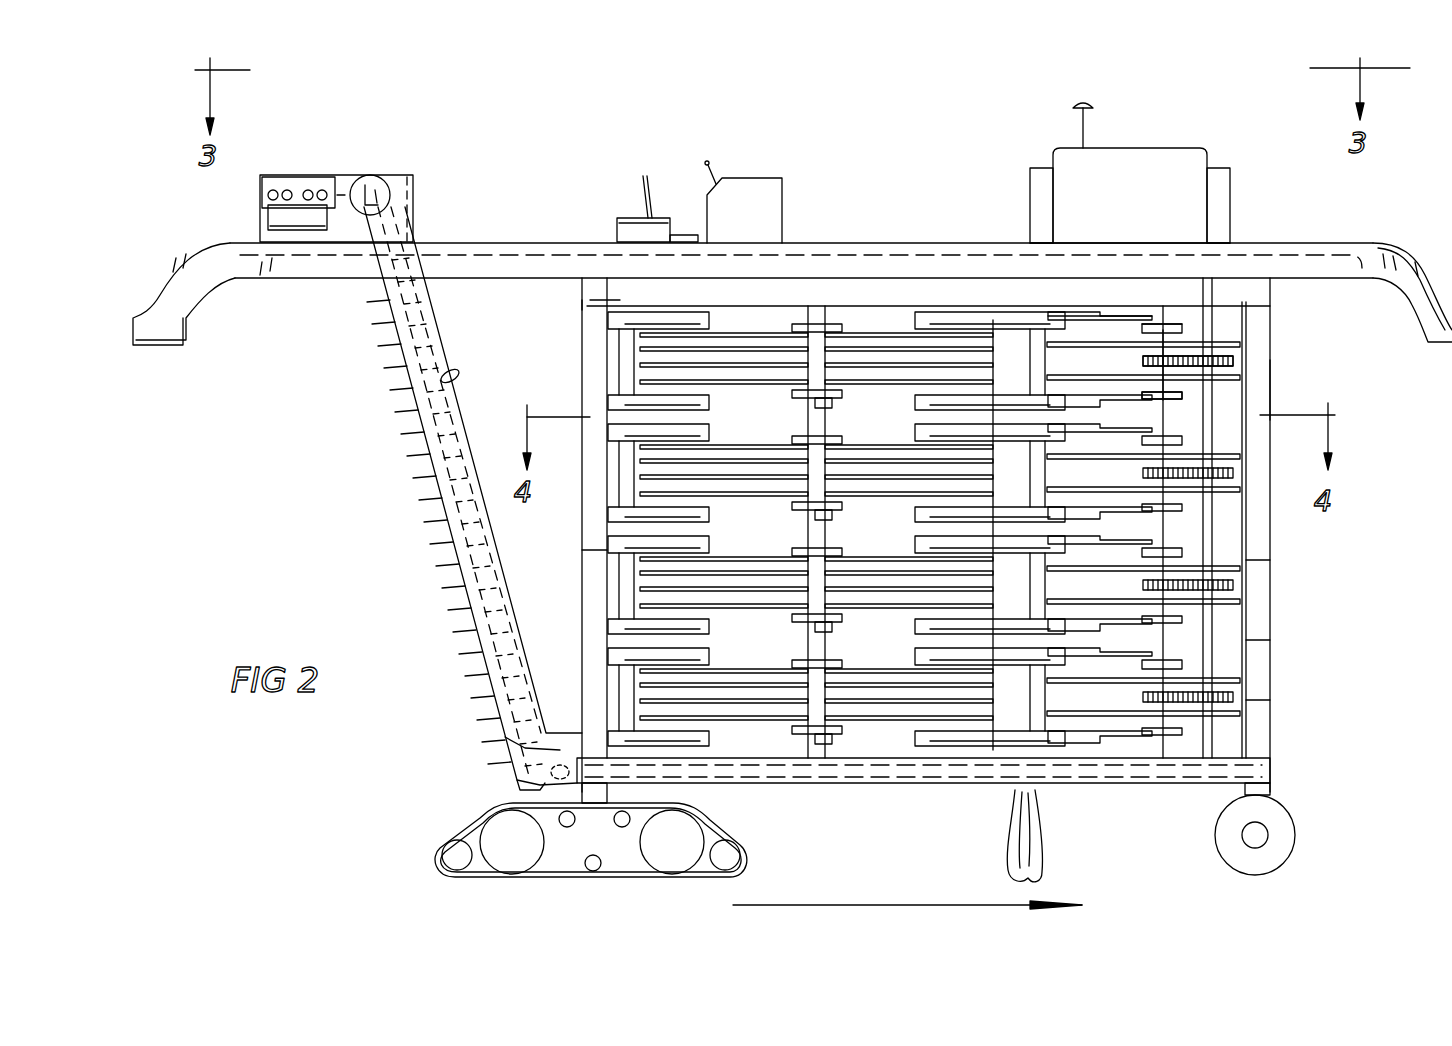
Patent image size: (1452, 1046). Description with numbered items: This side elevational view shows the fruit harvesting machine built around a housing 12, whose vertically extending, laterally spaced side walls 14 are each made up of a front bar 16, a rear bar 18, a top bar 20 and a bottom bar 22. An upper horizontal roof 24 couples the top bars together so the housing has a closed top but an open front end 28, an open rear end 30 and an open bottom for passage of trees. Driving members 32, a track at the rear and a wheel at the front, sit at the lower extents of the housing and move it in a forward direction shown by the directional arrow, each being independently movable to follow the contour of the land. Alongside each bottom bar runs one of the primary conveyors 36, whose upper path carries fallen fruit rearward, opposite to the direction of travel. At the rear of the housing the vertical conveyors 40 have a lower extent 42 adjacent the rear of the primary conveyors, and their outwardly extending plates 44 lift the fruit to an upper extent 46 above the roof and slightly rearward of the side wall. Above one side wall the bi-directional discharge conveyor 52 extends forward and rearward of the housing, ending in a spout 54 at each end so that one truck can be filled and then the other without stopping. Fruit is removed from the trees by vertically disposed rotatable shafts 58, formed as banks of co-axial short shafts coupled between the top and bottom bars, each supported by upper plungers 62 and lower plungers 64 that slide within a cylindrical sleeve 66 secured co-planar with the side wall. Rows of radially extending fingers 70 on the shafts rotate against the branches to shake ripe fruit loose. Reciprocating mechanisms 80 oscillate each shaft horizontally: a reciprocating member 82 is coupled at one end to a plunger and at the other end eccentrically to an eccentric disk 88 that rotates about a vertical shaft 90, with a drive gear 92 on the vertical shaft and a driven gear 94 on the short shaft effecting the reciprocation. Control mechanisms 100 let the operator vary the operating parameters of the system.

The housing 12 is at (1262, 318).
The side walls 14 is at (1272, 633).
The front bar 16 is at (1272, 568).
The rear bar 18 is at (592, 560).
The top bar 20 is at (870, 292).
The bottom bar 22 is at (910, 783).
The upper horizontal roof 24 is at (930, 285).
The open front end 28 is at (1298, 692).
The open rear end 30 is at (553, 323).
The driving members 32 is at (505, 885).
The primary conveyors 36 is at (520, 775).
The vertical conveyors 40 is at (440, 375).
The lower extent 42 is at (505, 735).
The outwardly extending plates 44 is at (440, 490).
The upper extent 46 is at (360, 185).
The bi-directional discharge conveyor 52 is at (455, 243).
The spout 54 is at (205, 308).
The rotatable shafts 58 is at (813, 345).
The upper plungers 62 is at (752, 318).
The lower plungers 64 is at (720, 405).
The cylindrical sleeve 66 is at (612, 305).
The radially extending fingers 70 is at (995, 330).
The reciprocating mechanisms 80 is at (1290, 380).
The reciprocating member 82 is at (1085, 315).
The eccentric disk 88 is at (1150, 355).
The shaft 90 is at (1170, 352).
The drive gear 92 is at (1165, 353).
The driven gear 94 is at (1260, 350).
The control mechanisms 100 is at (770, 155).